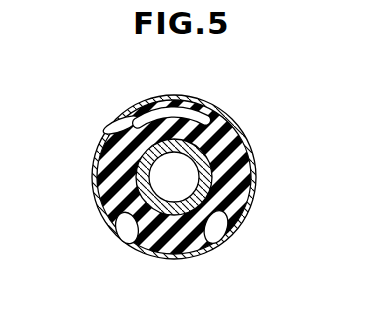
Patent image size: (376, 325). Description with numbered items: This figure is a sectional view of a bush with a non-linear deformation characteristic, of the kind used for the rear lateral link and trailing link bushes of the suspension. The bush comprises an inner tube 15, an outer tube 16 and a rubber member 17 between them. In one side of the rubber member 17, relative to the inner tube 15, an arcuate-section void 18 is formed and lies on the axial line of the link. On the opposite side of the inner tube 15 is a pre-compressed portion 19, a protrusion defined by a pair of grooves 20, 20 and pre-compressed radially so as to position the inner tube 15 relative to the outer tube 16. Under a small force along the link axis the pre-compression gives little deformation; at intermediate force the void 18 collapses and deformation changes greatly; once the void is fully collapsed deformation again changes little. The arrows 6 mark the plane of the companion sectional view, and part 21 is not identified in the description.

The bush 6 is at (173, 86).
The inner tube 15 is at (98, 204).
The outer tube 16 is at (240, 139).
The rubber member 17 is at (110, 124).
The void 18 is at (192, 113).
The pre-compressed portion 19 is at (178, 260).
The grooves 20 is at (122, 232).
The central bore 21 is at (174, 177).